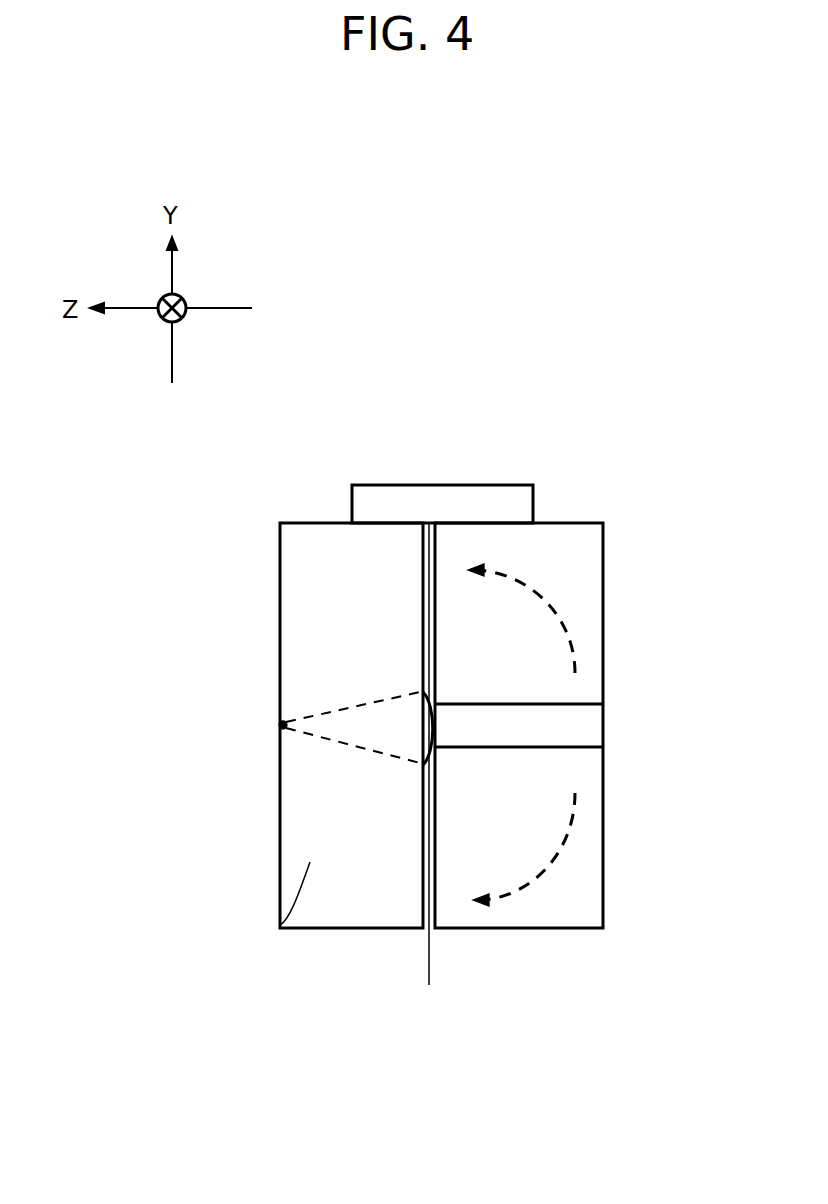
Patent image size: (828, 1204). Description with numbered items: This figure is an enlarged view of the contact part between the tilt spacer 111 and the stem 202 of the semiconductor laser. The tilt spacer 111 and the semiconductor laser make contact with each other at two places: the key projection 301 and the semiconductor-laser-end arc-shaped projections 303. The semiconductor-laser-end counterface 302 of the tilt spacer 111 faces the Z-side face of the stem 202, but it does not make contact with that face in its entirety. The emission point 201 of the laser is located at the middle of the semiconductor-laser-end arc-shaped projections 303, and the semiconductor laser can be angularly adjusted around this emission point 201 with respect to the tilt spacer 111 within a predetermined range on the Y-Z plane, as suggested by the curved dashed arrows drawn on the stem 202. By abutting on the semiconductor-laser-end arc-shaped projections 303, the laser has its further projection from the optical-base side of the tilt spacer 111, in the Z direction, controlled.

The tilt spacer 111 is at (280, 925).
The emission point 201 is at (282, 727).
The stem 202 is at (603, 650).
The key projection 301 is at (508, 485).
The semiconductor-laser-end counterface 302 is at (420, 563).
The semiconductor-laser-end arc-shaped projections 303 is at (432, 772).